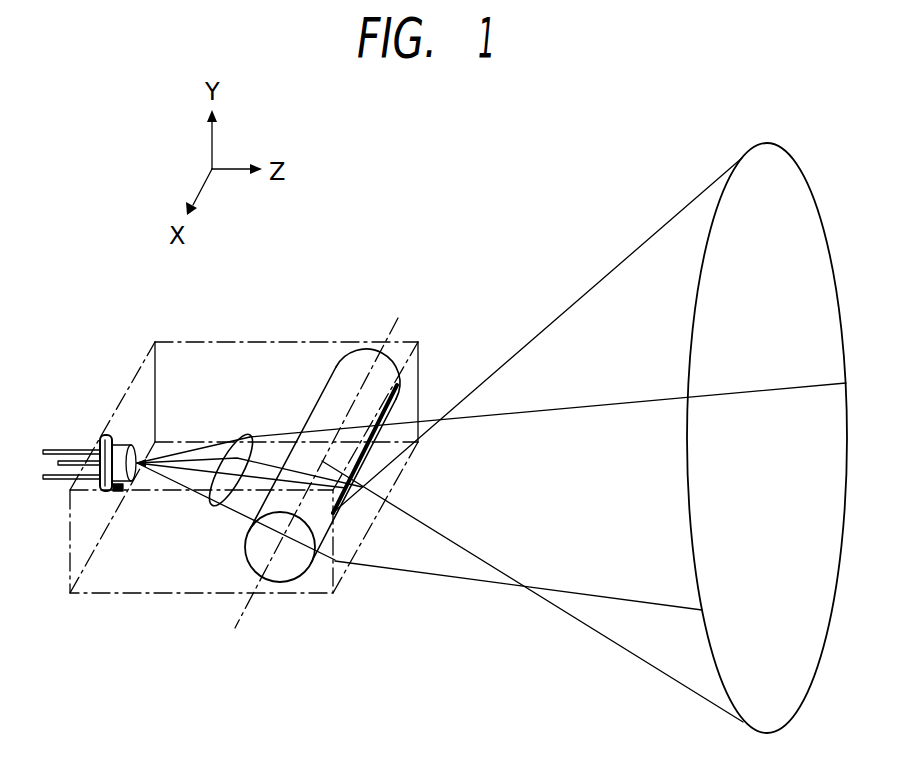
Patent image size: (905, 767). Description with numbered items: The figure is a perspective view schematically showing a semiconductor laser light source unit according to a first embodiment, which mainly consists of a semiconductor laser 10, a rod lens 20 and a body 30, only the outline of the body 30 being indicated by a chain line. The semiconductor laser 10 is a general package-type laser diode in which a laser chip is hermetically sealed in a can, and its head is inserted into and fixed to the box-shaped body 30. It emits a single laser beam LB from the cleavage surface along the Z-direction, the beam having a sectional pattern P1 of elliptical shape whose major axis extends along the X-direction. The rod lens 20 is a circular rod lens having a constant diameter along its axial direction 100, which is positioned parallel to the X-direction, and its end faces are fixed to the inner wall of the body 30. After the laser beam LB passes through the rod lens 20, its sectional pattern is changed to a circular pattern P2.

The semiconductor laser 10 is at (121, 493).
The laser beam LB is at (180, 448).
The sectional pattern of the laser beam P1 is at (216, 500).
The rod lens 20 is at (278, 578).
The body 30 is at (317, 580).
The axial direction of the rod lens 100 is at (393, 330).
The circular pattern P2 is at (750, 700).